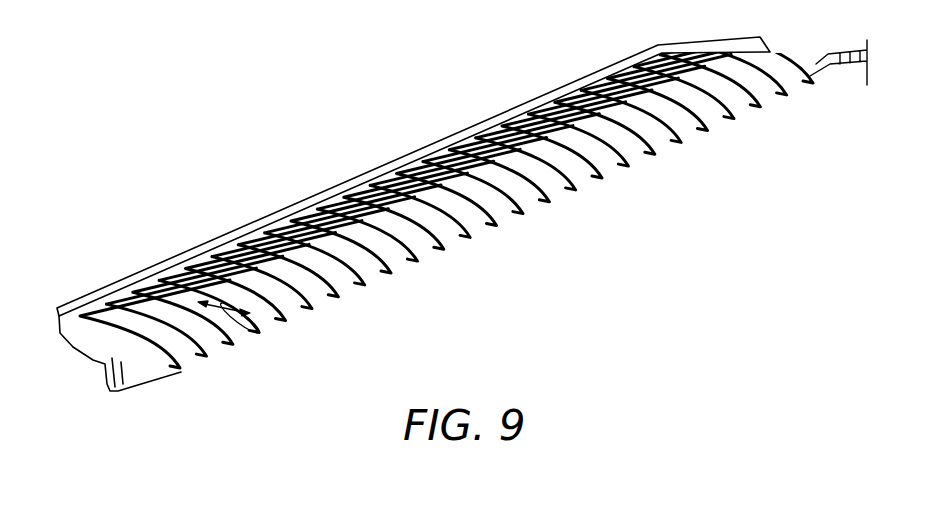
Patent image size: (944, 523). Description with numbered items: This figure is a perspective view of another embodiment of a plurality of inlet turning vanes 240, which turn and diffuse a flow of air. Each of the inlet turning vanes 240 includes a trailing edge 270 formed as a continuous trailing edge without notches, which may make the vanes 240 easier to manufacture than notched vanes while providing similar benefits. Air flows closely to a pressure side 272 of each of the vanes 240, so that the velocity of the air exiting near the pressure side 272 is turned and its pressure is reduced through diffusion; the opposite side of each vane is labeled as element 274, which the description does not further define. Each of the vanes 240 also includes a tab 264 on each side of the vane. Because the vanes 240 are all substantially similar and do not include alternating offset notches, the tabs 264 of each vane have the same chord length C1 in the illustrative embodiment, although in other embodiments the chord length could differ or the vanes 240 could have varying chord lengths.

The plurality of inlet turning vanes 240 is at (108, 402).
The tab 264 is at (233, 303).
The trailing edge 270 is at (222, 347).
The pressure side 272 is at (137, 310).
The fin curved portion 274 is at (172, 307).
The chord length C1 is at (220, 310).